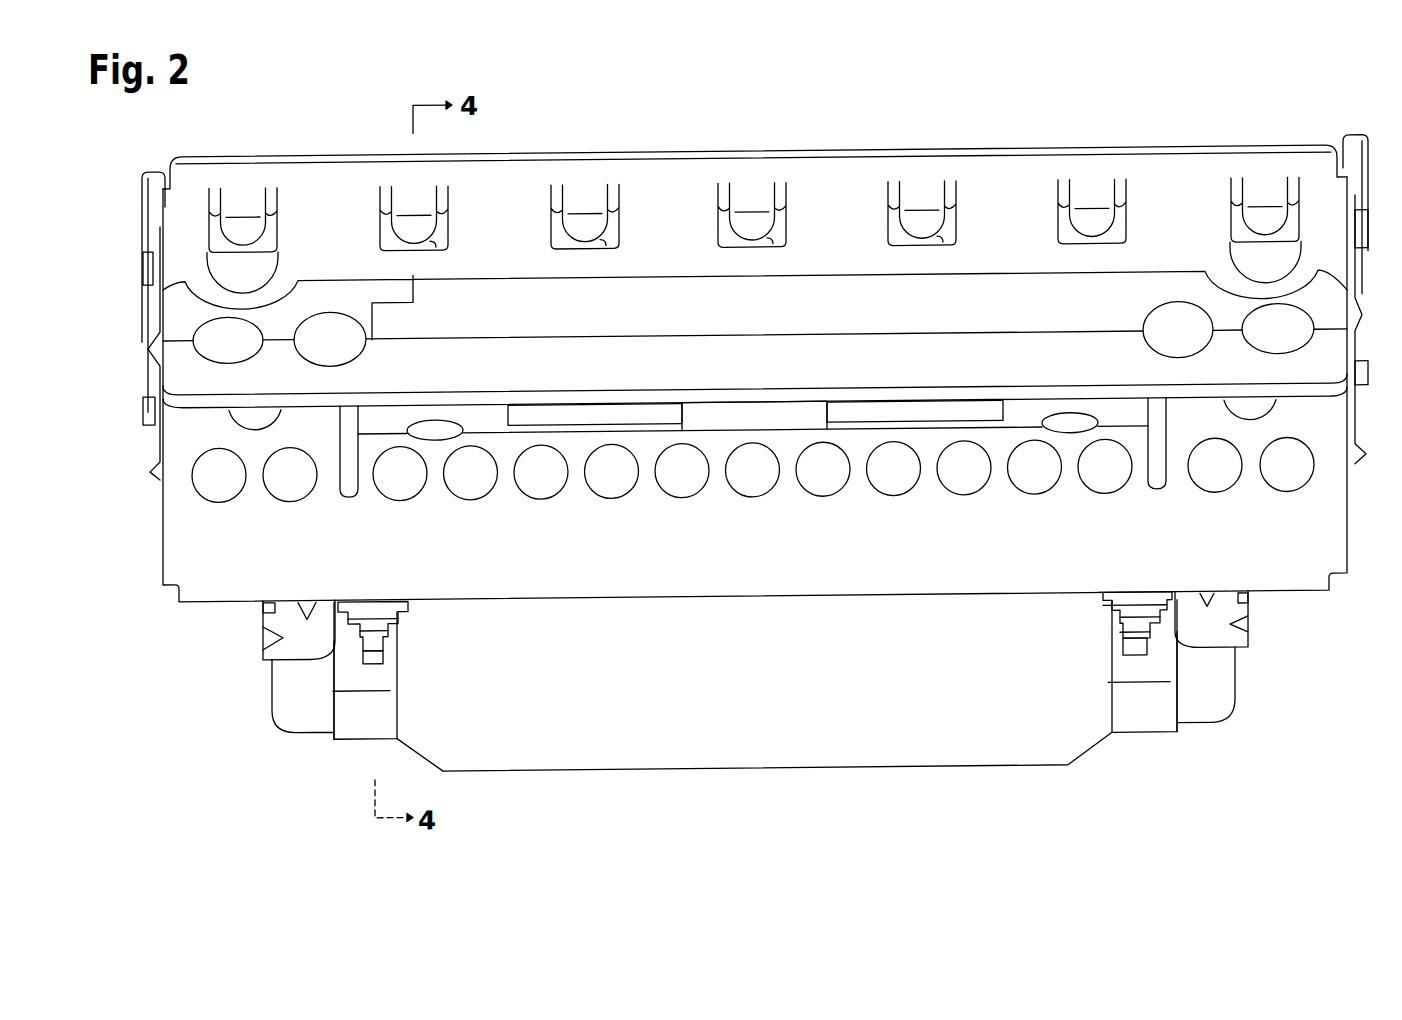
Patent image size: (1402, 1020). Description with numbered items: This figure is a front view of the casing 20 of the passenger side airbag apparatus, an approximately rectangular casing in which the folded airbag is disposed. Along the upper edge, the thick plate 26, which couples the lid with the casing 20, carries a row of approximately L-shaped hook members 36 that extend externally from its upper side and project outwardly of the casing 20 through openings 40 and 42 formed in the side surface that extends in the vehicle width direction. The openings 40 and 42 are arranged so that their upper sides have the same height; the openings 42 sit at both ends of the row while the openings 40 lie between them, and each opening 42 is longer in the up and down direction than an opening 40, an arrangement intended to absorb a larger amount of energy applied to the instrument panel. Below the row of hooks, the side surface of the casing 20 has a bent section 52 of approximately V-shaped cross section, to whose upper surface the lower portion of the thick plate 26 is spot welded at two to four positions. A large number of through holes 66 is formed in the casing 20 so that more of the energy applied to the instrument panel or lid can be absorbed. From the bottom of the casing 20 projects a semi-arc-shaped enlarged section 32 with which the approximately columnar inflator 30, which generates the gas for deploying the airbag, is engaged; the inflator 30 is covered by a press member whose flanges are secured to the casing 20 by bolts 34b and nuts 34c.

The casing 20 is at (205, 600).
The thick plate 26 is at (967, 307).
The inflator 30 is at (298, 717).
The enlarged section 32 is at (810, 768).
The bolt 34b is at (373, 658).
The nut 34c is at (395, 619).
The hook member 36 is at (242, 192).
The opening 40 is at (433, 244).
The opening 42 is at (282, 256).
The bent section 52 is at (793, 418).
The through hole 66 is at (613, 478).